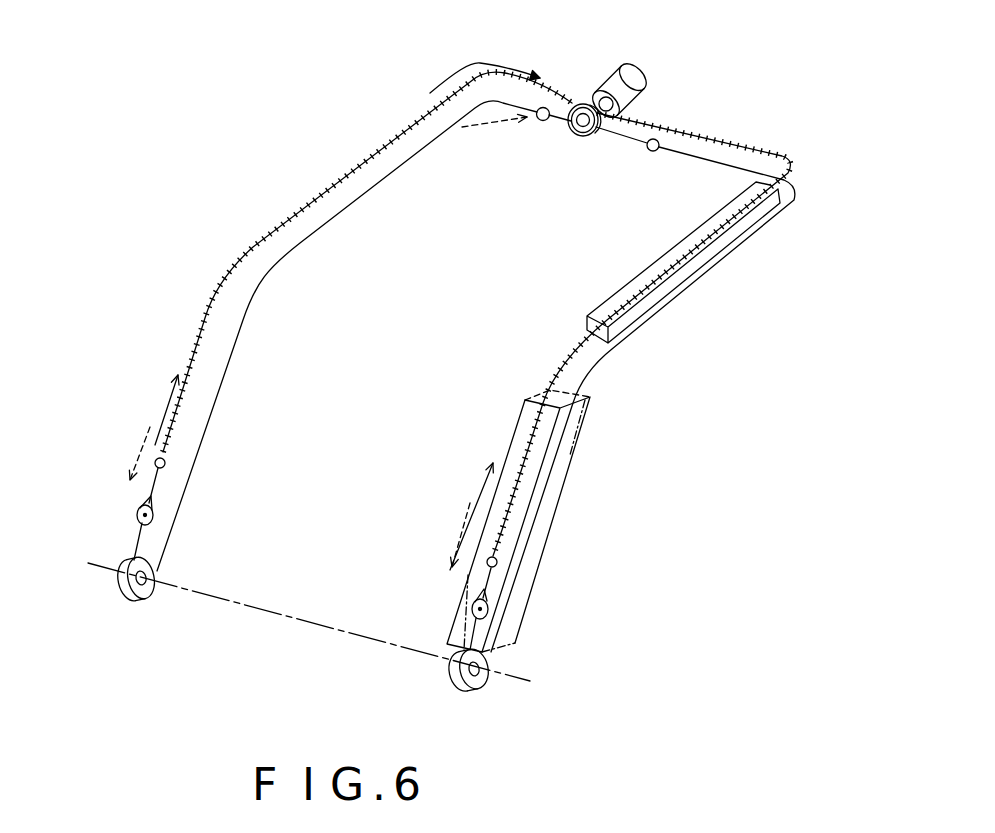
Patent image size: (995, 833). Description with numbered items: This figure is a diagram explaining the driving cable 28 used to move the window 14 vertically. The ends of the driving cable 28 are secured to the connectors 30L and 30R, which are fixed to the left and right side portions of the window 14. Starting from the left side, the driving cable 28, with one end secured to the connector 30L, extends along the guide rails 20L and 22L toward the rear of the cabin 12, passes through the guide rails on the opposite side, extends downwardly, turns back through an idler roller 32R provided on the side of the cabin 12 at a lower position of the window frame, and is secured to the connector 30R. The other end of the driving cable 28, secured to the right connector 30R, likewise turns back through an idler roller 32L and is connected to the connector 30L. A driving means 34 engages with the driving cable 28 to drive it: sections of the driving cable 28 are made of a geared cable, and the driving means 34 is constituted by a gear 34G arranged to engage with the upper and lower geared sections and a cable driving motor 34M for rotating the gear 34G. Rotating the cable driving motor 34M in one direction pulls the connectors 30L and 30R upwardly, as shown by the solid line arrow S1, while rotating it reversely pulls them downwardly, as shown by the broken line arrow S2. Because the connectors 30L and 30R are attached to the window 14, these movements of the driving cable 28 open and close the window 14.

The cabin 12 is at (656, 660).
The window 14 is at (297, 582).
The guide rail 20L is at (535, 560).
The guide rail 22L is at (652, 308).
The driving cable 28 is at (333, 187).
The connector 30R is at (137, 516).
The connector 30L is at (488, 608).
The idler roller 32R is at (137, 598).
The idler roller 32L is at (478, 685).
The driving means 34 is at (583, 96).
The cable driving motor 34M is at (645, 90).
The gear 34G is at (590, 135).
The solid line arrow S1 is at (473, 63).
The broken line arrow S2 is at (490, 112).